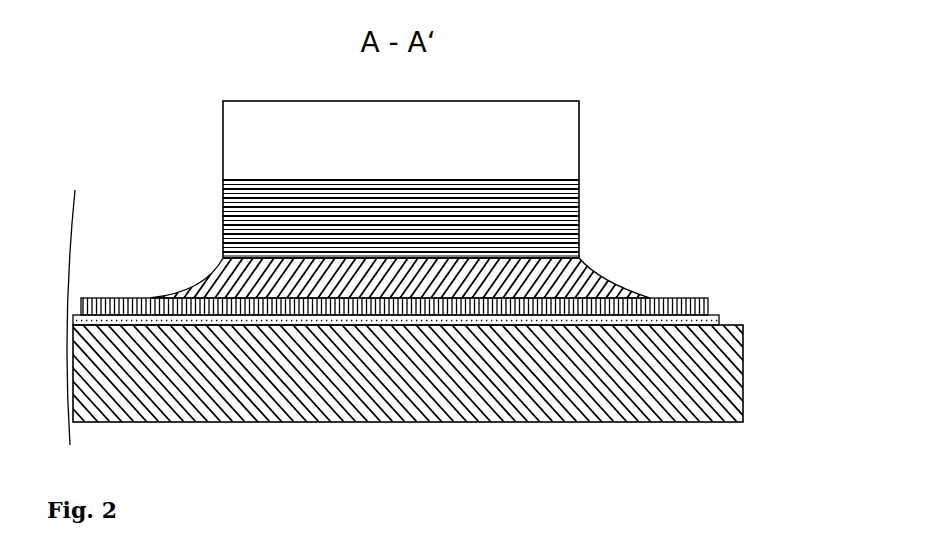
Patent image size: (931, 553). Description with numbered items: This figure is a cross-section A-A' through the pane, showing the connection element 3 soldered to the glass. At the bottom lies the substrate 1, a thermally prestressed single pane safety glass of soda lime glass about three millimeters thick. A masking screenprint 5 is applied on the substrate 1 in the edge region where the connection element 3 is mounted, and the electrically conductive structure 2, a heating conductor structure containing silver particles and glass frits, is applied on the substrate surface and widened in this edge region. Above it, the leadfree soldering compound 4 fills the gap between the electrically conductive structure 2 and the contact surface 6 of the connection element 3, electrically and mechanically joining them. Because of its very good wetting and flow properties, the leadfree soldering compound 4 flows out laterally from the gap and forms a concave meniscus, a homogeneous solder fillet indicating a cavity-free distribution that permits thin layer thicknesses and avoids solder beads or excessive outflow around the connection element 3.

The substrate 1 is at (712, 376).
The electrically conductive structure 2 is at (708, 300).
The connection element 3 is at (550, 200).
The leadfree soldering compound 4 is at (602, 270).
The masking screenprint 5 is at (722, 321).
The contact surface 6 is at (550, 253).